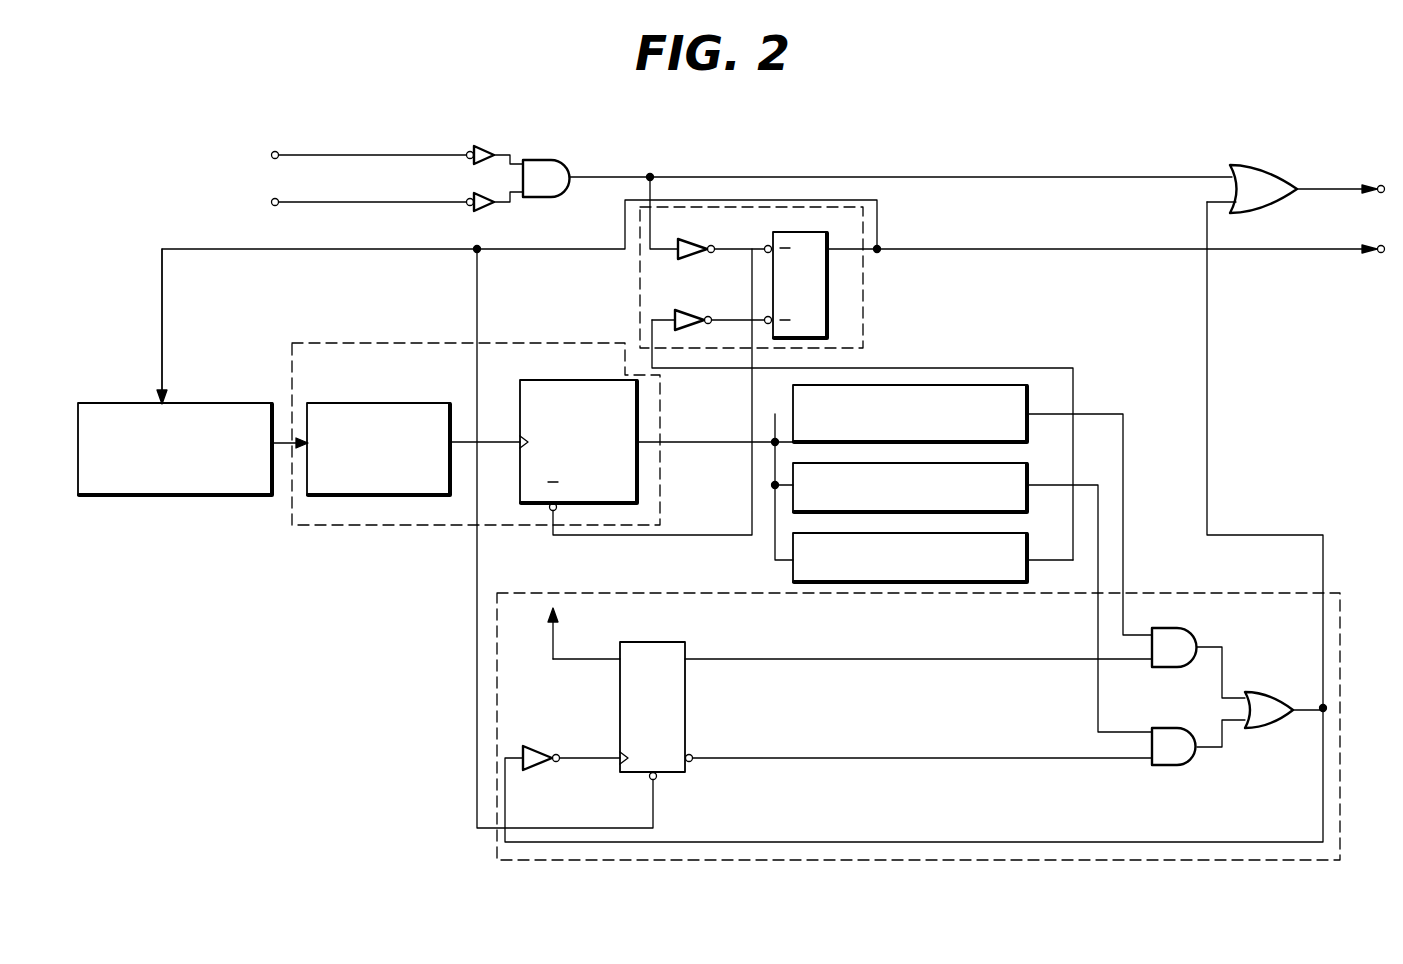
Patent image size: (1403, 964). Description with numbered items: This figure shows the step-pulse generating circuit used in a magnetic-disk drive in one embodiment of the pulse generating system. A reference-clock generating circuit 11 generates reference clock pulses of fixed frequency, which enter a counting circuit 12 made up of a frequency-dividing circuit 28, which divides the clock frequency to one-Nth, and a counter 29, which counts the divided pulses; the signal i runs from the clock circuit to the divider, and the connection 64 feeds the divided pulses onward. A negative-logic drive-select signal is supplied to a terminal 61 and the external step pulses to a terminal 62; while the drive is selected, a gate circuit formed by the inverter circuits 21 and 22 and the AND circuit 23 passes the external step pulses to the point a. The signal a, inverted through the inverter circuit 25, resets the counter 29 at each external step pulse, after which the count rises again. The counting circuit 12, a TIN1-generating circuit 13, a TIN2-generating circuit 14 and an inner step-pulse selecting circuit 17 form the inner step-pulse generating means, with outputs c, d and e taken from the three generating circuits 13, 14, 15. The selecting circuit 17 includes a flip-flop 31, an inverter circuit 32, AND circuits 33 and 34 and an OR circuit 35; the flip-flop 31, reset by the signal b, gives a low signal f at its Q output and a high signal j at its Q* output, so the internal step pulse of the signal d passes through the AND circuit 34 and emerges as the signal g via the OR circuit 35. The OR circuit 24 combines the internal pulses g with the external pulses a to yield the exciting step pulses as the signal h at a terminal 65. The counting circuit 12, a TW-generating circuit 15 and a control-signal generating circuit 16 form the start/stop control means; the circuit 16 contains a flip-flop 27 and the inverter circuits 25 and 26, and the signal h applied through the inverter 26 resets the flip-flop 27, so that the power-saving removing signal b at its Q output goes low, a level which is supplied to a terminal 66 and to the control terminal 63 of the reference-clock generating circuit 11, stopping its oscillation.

The reference-clock generating circuit 11 is at (105, 402).
The counting circuit 12 is at (335, 343).
The TIN1-generating circuit 13 is at (1028, 405).
The TIN2-generating circuit 14 is at (1015, 466).
The TW-generating circuit 15 is at (1015, 535).
The control-signal generating circuit 16 is at (863, 342).
The inner step-pulse selecting circuit 17 is at (640, 593).
The inverter circuit 21 is at (484, 145).
The inverter circuit 22 is at (484, 210).
The AND circuit 23 is at (548, 160).
The OR circuit 24 is at (1247, 166).
The inverter circuit 25 is at (686, 240).
The inverter circuit 26 is at (680, 311).
The flip-flop 27 is at (833, 292).
The frequency-dividing circuit 28 is at (342, 402).
The counter 29 is at (518, 404).
The flip-flop 31 is at (625, 642).
The inverter circuit 32 is at (536, 746).
The AND circuit 33 is at (1186, 628).
The AND circuit 34 is at (1165, 718).
The OR circuit 35 is at (1264, 692).
The terminal 61 is at (275, 150).
The terminal 62 is at (275, 198).
The control terminal 63 is at (157, 398).
The clock line 64 is at (278, 470).
The terminal 65 is at (1382, 184).
The terminal 66 is at (1381, 254).
The point a is at (690, 172).
The signal b is at (985, 249).
The point c is at (1100, 414).
The signal d is at (1083, 485).
The point e is at (1060, 560).
The signal f is at (778, 656).
The signal g is at (1328, 570).
The signal h is at (1312, 188).
The point i is at (285, 440).
The signal j is at (768, 754).